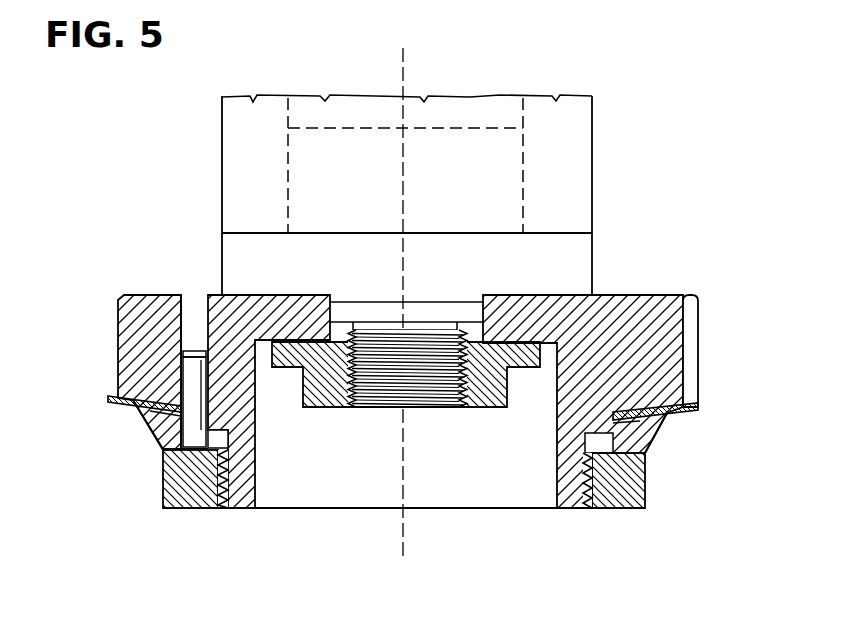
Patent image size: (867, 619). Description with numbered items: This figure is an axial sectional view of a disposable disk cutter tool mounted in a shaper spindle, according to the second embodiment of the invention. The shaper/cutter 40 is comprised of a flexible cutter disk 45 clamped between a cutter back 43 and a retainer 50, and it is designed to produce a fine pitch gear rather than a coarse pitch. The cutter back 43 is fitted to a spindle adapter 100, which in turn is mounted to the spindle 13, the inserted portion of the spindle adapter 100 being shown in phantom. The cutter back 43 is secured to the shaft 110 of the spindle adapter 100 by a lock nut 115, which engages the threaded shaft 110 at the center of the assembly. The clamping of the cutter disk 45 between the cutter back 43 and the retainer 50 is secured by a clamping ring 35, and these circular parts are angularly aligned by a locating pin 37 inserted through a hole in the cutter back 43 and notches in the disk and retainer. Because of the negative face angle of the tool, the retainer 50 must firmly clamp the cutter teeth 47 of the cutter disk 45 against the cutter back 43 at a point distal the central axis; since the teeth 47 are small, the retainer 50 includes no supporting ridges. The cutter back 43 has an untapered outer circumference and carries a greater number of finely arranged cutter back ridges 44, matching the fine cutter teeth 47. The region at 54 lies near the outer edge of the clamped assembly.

The spindle 13 is at (598, 98).
The spindle adapter 100 is at (523, 172).
The shaper/cutter 40 is at (397, 417).
The cutter back 43 is at (123, 295).
The cutter back ridges 44 is at (690, 305).
The cutter disk 45 is at (110, 398).
The cutter teeth 47 is at (697, 408).
The retainer 50 is at (148, 413).
The right chamfer 54 is at (645, 430).
The locating pin 37 is at (197, 410).
The clamping ring 35 is at (185, 475).
The shaft 110 is at (425, 380).
The lock nut 115 is at (492, 393).